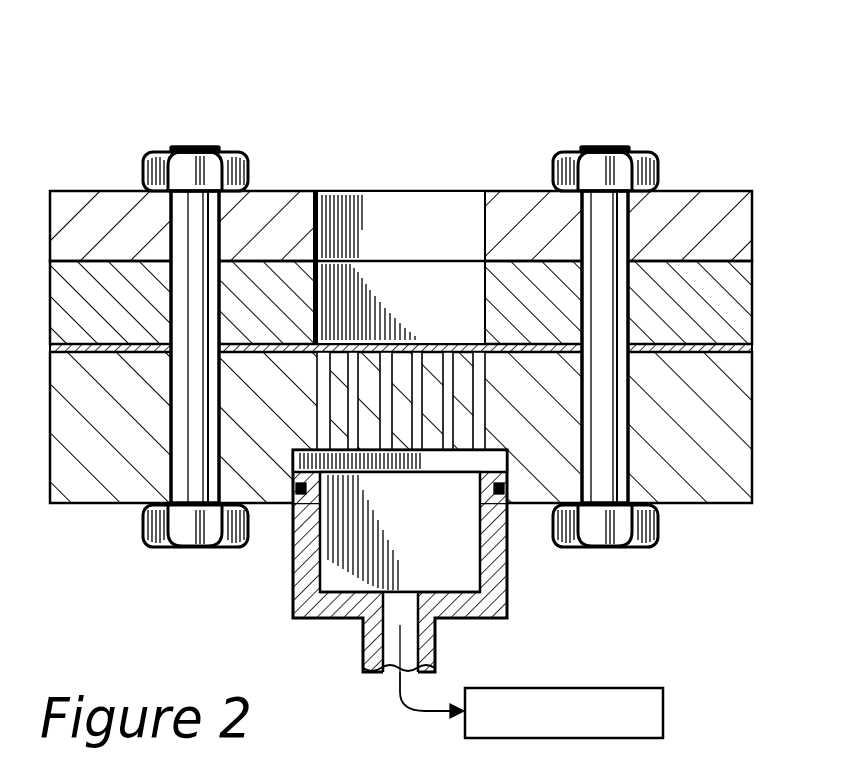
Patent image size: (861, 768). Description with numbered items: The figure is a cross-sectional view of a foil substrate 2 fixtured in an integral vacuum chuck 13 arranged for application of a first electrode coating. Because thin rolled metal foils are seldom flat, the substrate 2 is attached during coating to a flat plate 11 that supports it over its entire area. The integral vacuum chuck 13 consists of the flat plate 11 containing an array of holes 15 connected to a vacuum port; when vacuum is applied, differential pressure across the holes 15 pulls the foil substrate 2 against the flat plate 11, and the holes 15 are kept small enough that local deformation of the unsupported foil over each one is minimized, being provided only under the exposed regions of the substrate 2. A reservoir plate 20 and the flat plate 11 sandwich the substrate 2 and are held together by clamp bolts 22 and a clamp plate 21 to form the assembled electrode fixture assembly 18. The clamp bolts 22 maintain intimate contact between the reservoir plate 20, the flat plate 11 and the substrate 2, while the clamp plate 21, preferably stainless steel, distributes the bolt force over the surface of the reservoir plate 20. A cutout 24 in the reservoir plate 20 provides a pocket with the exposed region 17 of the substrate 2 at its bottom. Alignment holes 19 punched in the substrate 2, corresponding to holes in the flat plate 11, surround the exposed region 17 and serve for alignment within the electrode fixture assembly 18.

The electrode fixture assembly 18 is at (525, 118).
The clamp bolts 22 is at (200, 213).
The clamp plate 21 is at (738, 231).
The reservoir plate 20 is at (740, 312).
The cutout 24 is at (485, 300).
The exposed region 17 is at (457, 337).
The substrate 2 is at (745, 348).
The flat plate 11 is at (735, 450).
The alignment holes 19 is at (178, 447).
The holes 15 is at (360, 437).
The integral vacuum chuck 13 is at (542, 602).